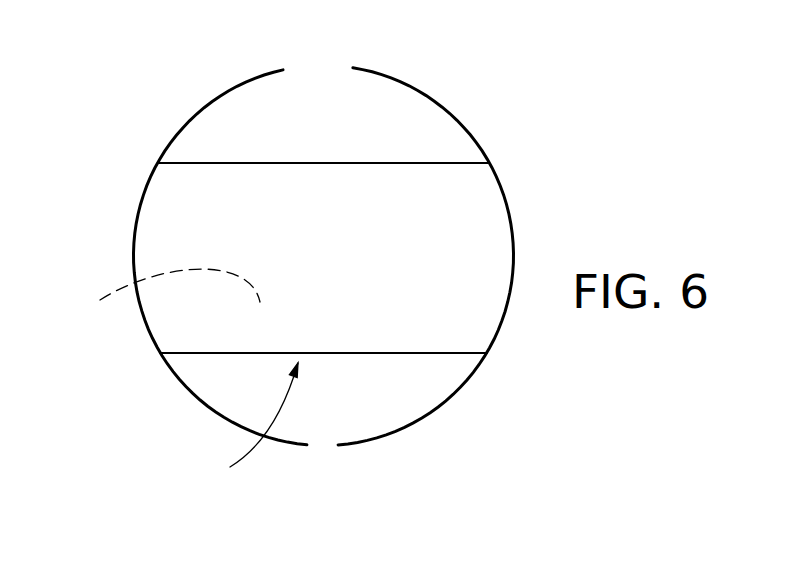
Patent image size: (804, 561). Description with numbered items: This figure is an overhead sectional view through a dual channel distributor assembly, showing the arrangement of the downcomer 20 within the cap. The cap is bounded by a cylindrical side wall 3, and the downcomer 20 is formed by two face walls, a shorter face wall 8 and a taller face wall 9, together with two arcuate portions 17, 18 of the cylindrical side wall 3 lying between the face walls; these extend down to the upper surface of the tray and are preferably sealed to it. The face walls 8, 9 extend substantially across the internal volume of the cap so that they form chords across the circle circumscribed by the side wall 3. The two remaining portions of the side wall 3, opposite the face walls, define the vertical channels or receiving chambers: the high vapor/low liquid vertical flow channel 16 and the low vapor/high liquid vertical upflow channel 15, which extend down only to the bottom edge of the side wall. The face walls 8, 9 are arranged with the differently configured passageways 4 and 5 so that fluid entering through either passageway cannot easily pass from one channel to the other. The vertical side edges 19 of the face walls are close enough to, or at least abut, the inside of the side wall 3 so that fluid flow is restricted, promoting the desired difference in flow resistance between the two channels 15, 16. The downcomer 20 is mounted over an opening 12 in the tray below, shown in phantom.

The cylindrical side wall 3 is at (468, 127).
The passageway 4 is at (320, 445).
The large passageway 5 is at (318, 68).
The shorter face wall 8 is at (233, 353).
The taller face wall 9 is at (225, 163).
The opening 12 is at (158, 297).
The low vapor/high liquid vertical upflow channel 15 is at (350, 382).
The high vapor/low liquid vertical flow channel 16 is at (360, 130).
The arcuate portion of the side wall 17 is at (512, 240).
The arcuate portion of the side wall 18 is at (137, 225).
The vertical side edge 19 is at (162, 163).
The downcomer 20 is at (240, 427).